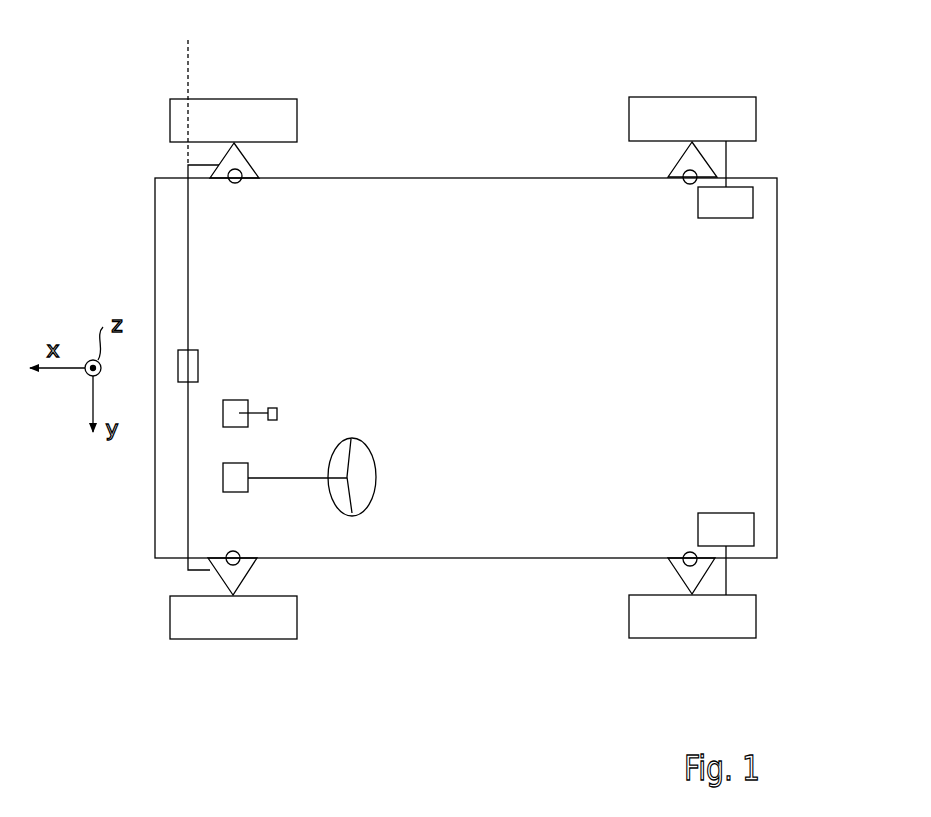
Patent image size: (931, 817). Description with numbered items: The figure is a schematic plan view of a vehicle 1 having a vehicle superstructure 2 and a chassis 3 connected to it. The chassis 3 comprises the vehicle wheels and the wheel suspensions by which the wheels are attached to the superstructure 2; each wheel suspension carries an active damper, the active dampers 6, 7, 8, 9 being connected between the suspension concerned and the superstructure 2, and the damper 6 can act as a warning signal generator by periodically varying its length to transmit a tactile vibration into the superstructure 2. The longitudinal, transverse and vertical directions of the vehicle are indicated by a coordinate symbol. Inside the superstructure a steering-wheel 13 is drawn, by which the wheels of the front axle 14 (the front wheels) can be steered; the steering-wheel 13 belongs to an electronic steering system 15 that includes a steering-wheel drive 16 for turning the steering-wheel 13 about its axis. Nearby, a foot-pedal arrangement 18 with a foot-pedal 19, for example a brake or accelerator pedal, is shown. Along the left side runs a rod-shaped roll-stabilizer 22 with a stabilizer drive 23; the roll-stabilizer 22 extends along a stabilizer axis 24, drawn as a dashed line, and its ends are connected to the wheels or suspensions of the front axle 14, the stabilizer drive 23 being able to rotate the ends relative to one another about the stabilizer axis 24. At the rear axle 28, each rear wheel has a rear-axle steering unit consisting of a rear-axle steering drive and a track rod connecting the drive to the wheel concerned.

The vehicle 1 is at (107, 80).
The vehicle superstructure 2 is at (437, 178).
The chassis 3 is at (160, 637).
The active damper 6 is at (223, 577).
The active damper 7 is at (229, 169).
The active damper 8 is at (683, 183).
The active damper 9 is at (684, 556).
The steering-wheel 13 is at (365, 443).
The front axle 14 is at (258, 73).
The electronic steering system 15 is at (330, 430).
The steering-wheel drive 16 is at (240, 483).
The foot-pedal arrangement 18 is at (232, 390).
The foot-pedal 19 is at (261, 410).
The roll-stabilizer 22 is at (185, 233).
The stabilizer drive 23 is at (192, 352).
The stabilizer axis 24 is at (185, 70).
The rear axle 28 is at (730, 80).